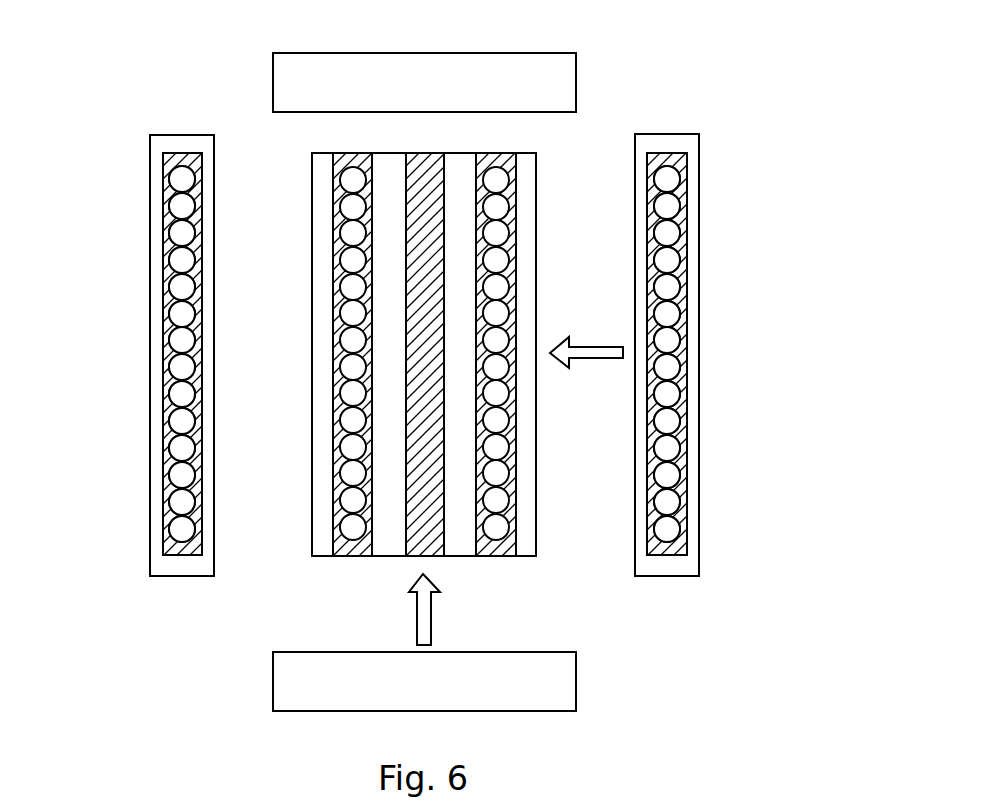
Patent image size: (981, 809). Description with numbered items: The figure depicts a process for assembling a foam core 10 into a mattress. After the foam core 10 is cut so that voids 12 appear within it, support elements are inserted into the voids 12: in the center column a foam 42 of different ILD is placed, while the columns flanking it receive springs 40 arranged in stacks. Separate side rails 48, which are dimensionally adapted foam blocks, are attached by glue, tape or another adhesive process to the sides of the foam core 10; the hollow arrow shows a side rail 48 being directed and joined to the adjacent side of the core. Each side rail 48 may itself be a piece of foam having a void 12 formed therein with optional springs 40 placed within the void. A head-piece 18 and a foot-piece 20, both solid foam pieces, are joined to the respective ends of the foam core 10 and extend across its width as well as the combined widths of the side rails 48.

The foam core 10 is at (478, 385).
The voids 12 is at (687, 165).
The head-piece 18 is at (573, 86).
The foot-piece 20 is at (572, 683).
The springs 40 is at (345, 517).
The foam 42 is at (410, 537).
The side rails 48 is at (150, 485).